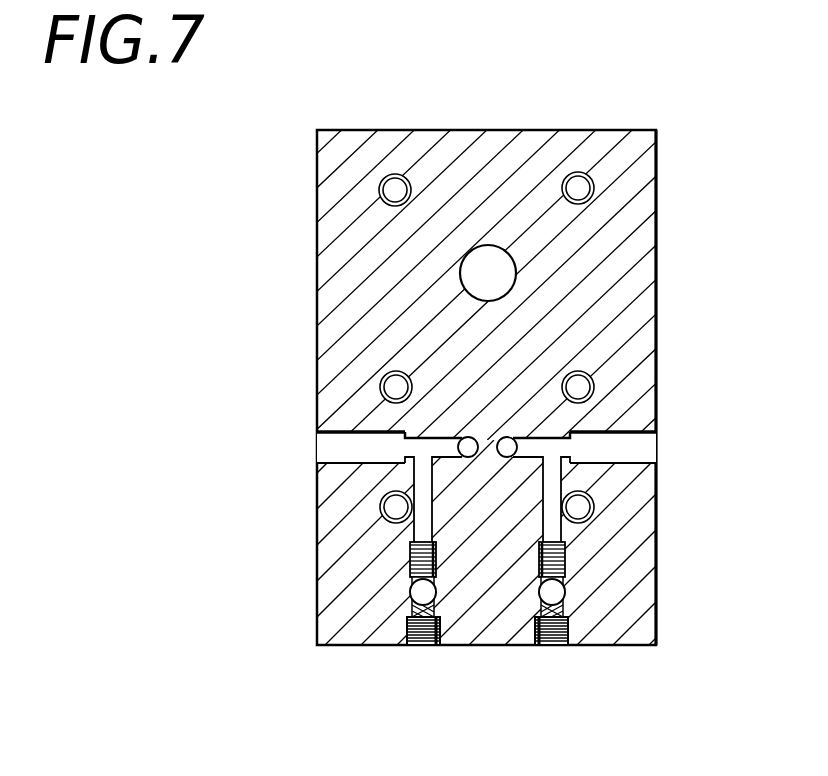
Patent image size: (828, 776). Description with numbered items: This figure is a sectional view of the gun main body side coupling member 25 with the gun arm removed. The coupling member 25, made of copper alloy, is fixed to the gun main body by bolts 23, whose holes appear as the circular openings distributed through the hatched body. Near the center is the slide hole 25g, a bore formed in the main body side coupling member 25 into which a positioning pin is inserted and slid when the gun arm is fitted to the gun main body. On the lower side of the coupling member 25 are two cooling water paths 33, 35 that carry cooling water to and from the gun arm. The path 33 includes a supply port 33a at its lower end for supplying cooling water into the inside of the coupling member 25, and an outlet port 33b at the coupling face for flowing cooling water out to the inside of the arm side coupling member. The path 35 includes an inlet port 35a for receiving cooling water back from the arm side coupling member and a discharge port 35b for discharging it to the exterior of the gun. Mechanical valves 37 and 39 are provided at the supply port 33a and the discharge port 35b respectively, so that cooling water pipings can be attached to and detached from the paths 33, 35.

The bolts 23 is at (395, 177).
The gun main body side coupling member 25 is at (606, 130).
The slide hole 25g is at (482, 247).
The cooling water path 33 is at (423, 477).
The supply port 33a is at (433, 646).
The outlet port 33b is at (468, 437).
The cooling water path 35 is at (553, 475).
The inlet port 35a is at (507, 437).
The discharge port 35b is at (555, 646).
The mechanical valve 37 is at (418, 590).
The mechanical valve 39 is at (560, 592).